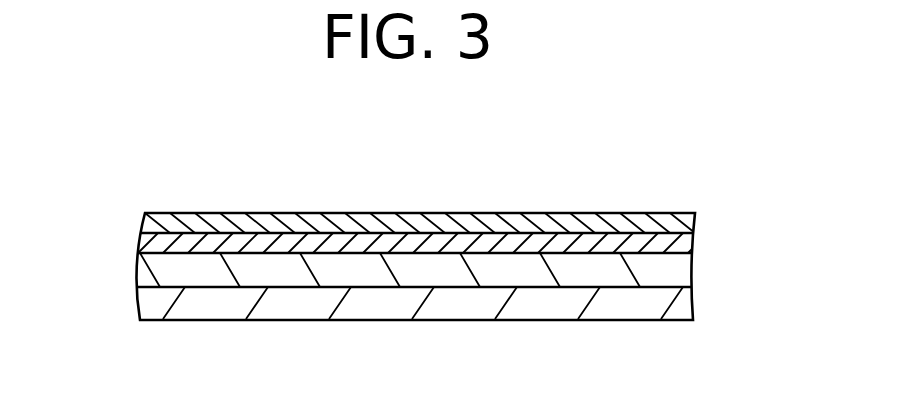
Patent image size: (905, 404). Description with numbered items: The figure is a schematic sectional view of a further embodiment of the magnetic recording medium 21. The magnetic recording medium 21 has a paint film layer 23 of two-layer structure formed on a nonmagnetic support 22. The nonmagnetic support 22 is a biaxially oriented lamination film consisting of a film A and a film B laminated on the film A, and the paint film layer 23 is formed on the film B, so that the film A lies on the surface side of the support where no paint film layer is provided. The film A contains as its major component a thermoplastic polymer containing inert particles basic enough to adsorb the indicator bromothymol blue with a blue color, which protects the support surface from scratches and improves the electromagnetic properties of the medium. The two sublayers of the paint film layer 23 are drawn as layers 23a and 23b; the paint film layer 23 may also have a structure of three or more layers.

The magnetic recording medium 21 is at (482, 185).
The nonmagnetic support 22 is at (712, 254).
The paint film layer 23 is at (705, 252).
The outer surface layer 23a is at (170, 219).
The inner surface layer 23b is at (140, 250).
The film A is at (153, 303).
The film B is at (157, 268).